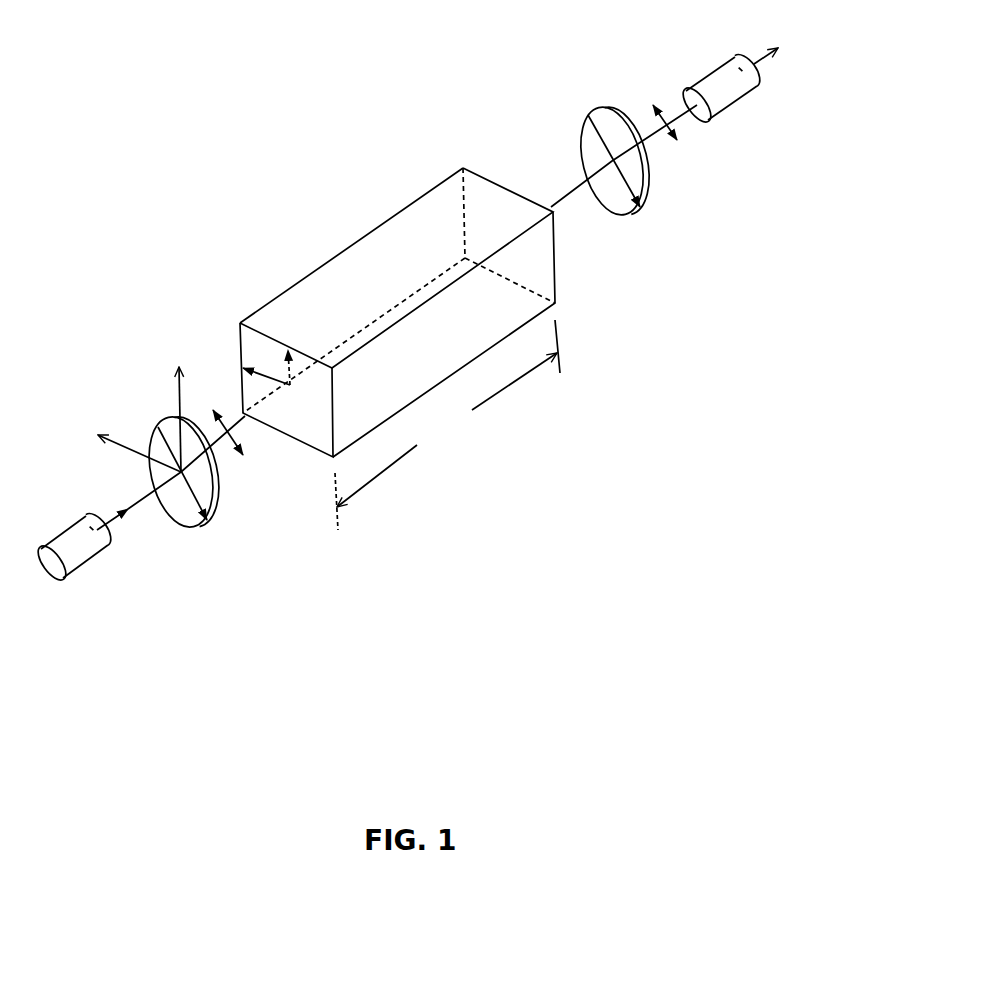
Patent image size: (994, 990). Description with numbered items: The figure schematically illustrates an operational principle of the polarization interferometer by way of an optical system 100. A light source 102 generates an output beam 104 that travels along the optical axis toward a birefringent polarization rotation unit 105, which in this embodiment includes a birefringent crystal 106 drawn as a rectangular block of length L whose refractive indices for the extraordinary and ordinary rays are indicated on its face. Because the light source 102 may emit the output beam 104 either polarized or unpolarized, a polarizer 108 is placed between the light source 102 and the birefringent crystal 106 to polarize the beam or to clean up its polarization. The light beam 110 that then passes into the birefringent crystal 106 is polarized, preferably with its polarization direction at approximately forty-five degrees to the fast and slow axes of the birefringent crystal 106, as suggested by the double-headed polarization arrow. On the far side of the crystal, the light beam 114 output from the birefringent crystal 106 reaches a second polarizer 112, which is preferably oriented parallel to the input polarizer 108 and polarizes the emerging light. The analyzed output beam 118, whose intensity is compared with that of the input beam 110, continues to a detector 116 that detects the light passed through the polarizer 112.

The optical system 100 is at (183, 150).
The light source 102 is at (62, 529).
The output beam 104 is at (123, 520).
The birefringent polarization rotation unit 105 is at (385, 322).
The birefringent crystal 106 is at (360, 242).
The polarizer 108 is at (148, 440).
The light beam 110 is at (247, 428).
The polarizer 112 is at (587, 133).
The light beam 114 is at (568, 194).
The detector 116 is at (708, 127).
The analyzed output beam 118 is at (643, 138).